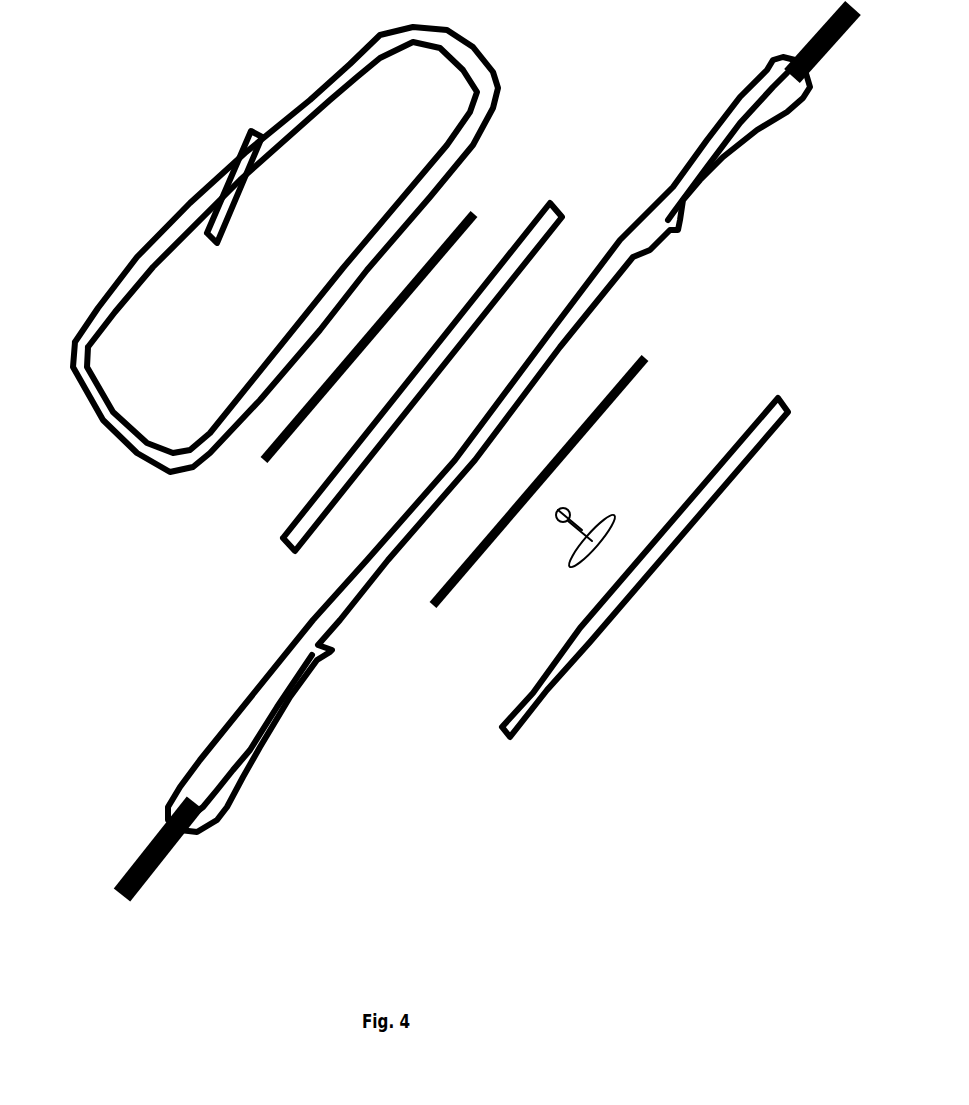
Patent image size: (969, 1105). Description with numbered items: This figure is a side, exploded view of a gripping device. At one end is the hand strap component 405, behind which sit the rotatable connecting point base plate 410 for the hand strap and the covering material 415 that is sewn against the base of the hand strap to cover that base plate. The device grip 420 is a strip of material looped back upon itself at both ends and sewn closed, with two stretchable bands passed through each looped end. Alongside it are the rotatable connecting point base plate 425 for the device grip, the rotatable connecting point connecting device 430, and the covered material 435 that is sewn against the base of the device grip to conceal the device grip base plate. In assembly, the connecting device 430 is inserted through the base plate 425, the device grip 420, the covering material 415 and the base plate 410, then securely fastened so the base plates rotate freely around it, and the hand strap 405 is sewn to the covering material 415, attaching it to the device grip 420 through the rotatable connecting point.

The hand strap component 405 is at (140, 248).
The rotatable connecting point base plate 410 is at (262, 453).
The covering material 415 is at (285, 533).
The device grip 420 is at (228, 727).
The rotatable connecting point base plate for the device grip 425 is at (437, 592).
The rotatable connecting point connecting device 430 is at (563, 535).
The covered material 435 is at (498, 727).